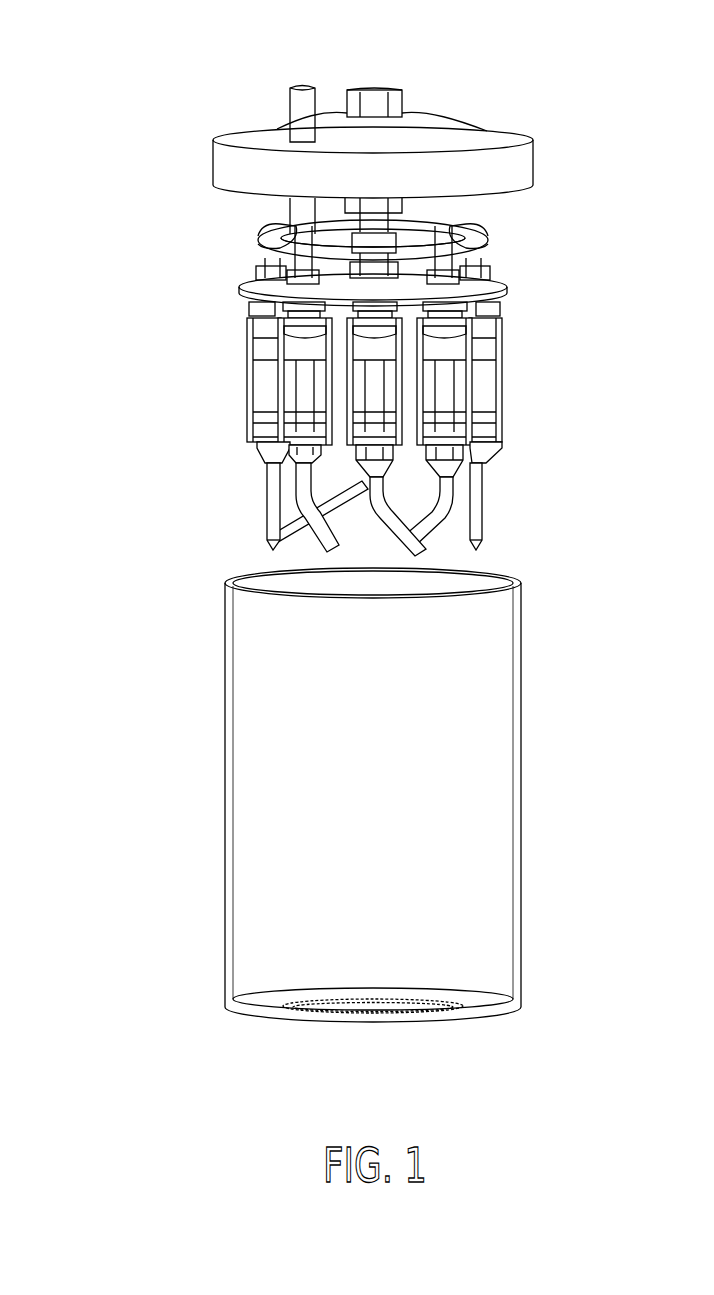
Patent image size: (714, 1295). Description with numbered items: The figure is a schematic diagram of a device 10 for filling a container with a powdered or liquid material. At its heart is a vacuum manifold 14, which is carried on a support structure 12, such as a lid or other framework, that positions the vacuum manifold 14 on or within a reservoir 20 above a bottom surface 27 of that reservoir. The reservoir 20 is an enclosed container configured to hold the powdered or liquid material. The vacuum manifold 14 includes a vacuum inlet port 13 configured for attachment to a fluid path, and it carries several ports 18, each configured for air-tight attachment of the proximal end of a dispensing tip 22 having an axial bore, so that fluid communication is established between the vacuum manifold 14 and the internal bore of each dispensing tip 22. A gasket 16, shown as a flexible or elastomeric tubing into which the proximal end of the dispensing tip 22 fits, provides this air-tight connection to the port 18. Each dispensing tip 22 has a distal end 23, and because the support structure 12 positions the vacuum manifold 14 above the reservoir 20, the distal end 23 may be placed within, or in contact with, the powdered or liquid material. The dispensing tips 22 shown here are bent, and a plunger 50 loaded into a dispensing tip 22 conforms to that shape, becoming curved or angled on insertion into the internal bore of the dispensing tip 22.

The device 10 is at (140, 78).
The support structure 12 is at (227, 163).
The vacuum inlet port 13 is at (305, 100).
The vacuum manifold 14 is at (480, 242).
The gasket 16 is at (255, 380).
The port 18 is at (497, 283).
The reservoir 20 is at (258, 803).
The dispensing tip 22 is at (470, 470).
The distal end 23 is at (487, 541).
The bottom surface 27 is at (433, 1012).
The plunger 50 is at (385, 490).